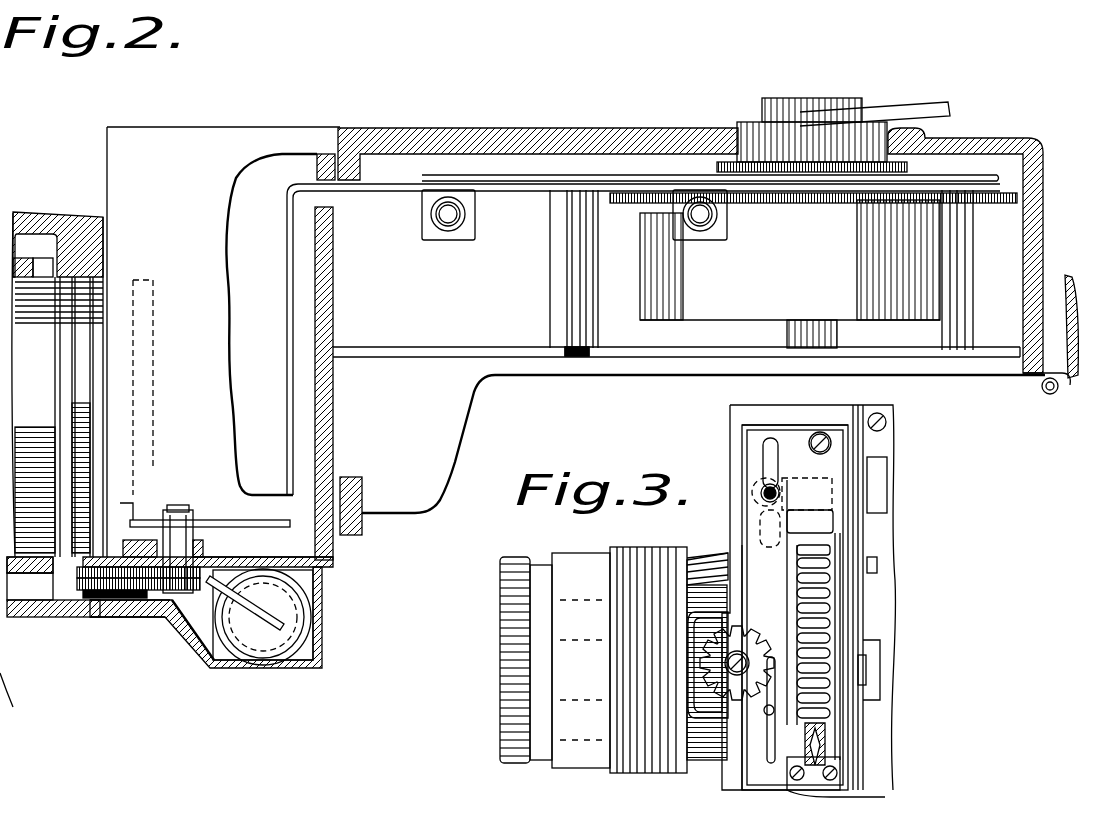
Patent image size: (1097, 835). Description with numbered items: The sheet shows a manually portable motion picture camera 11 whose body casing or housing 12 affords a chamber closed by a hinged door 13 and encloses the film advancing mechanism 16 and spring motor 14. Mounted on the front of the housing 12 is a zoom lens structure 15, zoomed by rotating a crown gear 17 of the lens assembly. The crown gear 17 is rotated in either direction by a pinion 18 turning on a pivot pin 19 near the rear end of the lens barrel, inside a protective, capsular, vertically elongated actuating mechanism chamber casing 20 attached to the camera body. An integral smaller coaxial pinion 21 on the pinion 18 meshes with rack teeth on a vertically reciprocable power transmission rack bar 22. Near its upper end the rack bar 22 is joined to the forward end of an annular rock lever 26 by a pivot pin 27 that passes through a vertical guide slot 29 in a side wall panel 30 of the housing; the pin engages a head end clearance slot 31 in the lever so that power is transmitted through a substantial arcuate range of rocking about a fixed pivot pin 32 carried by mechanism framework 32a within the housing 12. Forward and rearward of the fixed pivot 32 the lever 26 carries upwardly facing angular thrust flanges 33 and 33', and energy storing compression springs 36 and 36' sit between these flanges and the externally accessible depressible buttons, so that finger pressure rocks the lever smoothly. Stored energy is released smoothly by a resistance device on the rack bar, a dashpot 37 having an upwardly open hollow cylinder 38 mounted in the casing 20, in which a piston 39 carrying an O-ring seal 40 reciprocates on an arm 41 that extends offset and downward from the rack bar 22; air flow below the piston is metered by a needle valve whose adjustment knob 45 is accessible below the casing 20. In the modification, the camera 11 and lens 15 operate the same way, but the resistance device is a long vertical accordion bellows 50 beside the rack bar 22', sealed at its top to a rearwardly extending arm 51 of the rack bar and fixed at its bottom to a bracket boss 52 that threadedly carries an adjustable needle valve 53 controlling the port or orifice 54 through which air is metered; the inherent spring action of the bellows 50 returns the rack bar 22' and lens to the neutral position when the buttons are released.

In FIG. 2, the motion picture camera 11 is at (90, 150).
In FIG. 3, the motion picture camera 11 is at (717, 429).
In FIG. 2, the body casing or housing 12 is at (348, 130).
In FIG. 2, the hinged door 13 is at (1052, 394).
In FIG. 2, the spring motor 14 is at (660, 300).
In FIG. 2, the zoom lens structure 15 is at (51, 460).
In FIG. 3, the zoom lens structure 15 is at (594, 545).
In FIG. 3, the film advancing mechanism 16 is at (888, 662).
In FIG. 2, the crown gear 17 is at (30, 605).
In FIG. 3, the crown gear 17 is at (730, 620).
In FIG. 2, the pinion 18 is at (68, 598).
In FIG. 3, the pinion 18 is at (760, 605).
In FIG. 2, the pivot pin 19 is at (125, 595).
In FIG. 3, the pivot pin 19 is at (720, 655).
In FIG. 2, the actuating mechanism chamber casing 20 is at (208, 665).
In FIG. 3, the actuating mechanism chamber casing 20 is at (745, 458).
In FIG. 2, the coaxial pinion 21 is at (140, 600).
In FIG. 3, the coaxial pinion 21 is at (760, 640).
In FIG. 2, the power transmission rack bar 22 is at (142, 626).
In FIG. 3, the rack bar 22' is at (719, 550).
In FIG. 2, the rock lever 26 is at (385, 205).
In FIG. 3, the rock lever 26 is at (887, 478).
In FIG. 2, the pivot pin 27 is at (175, 512).
In FIG. 3, the pivot pin 27 is at (780, 492).
In FIG. 2, the vertical guide slot 29 is at (205, 527).
In FIG. 3, the vertical guide slot 29 is at (780, 468).
In FIG. 2, the side wall panel 30 is at (248, 548).
In FIG. 3, the side wall panel 30 is at (815, 402).
In FIG. 3, the head end clearance slot 31 is at (755, 492).
In FIG. 2, the fixed pivot pin 32 is at (580, 360).
In FIG. 2, the mechanism framework 32a is at (455, 358).
In FIG. 2, the angular thrust flange 33 is at (435, 240).
In FIG. 2, the angular thrust flange projection 33' is at (728, 232).
In FIG. 2, the compression spring 36 is at (475, 233).
In FIG. 2, the compression spring 36' is at (737, 221).
In FIG. 2, the dashpot 37 is at (234, 660).
In FIG. 2, the hollow cylinder 38 is at (295, 653).
In FIG. 2, the piston 39 is at (300, 641).
In FIG. 2, the O-ring seal 40 is at (312, 614).
In FIG. 2, the arm 41 is at (282, 612).
In FIG. 2, the adjustment knob 45 is at (27, 199).
In FIG. 3, the accordion bellows 50 is at (835, 572).
In FIG. 3, the rearwardly extending arm 51 is at (830, 535).
In FIG. 3, the boss 52 is at (825, 758).
In FIG. 3, the adjustable needle valve 53 is at (868, 795).
In FIG. 3, the port or orifice 54 is at (790, 765).